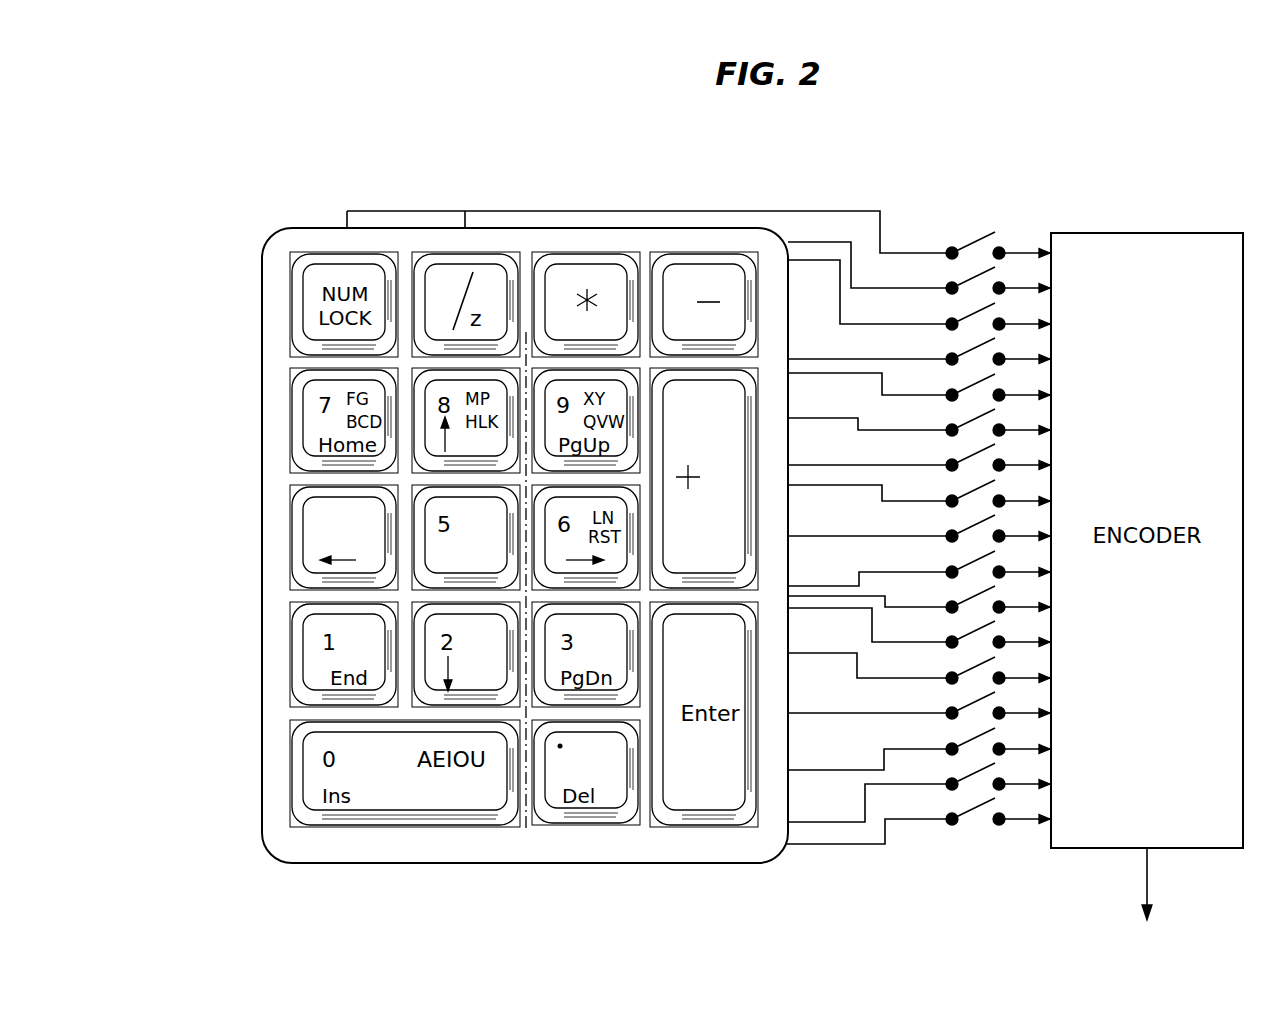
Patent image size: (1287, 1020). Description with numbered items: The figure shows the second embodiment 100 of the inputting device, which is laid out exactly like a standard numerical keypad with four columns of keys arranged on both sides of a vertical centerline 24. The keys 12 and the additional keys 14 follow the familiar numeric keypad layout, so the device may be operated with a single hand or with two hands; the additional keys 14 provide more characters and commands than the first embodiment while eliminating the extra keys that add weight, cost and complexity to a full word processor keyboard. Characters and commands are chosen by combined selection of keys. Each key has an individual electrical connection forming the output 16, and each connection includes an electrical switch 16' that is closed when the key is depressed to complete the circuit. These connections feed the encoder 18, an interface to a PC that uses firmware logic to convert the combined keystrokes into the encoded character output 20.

The second embodiment 100 is at (872, 165).
The key 12 is at (317, 541).
The additional key 14 is at (720, 423).
The vertical centerline 24 is at (526, 332).
The electrical switch 16' is at (998, 219).
The output 16 is at (998, 847).
The encoder 18 is at (1140, 226).
The encoded character output 20 is at (1160, 888).